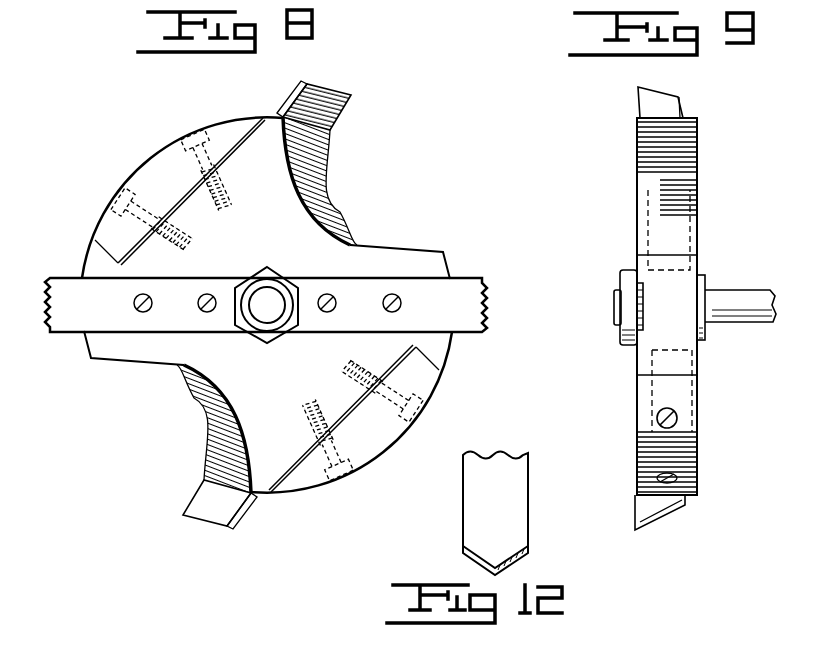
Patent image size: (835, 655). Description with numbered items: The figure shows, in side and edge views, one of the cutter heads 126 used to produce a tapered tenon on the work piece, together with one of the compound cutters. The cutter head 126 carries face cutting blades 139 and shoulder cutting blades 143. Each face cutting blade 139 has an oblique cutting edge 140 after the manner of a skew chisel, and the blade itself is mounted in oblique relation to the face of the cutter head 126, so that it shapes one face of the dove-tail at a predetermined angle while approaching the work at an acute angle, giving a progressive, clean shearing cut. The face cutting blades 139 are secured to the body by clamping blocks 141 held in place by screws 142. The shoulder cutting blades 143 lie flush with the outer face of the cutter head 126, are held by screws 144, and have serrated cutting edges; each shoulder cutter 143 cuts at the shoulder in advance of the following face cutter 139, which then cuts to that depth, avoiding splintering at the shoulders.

In FIG. 8, the cutter head 126 is at (340, 212).
In FIG. 9, the cutter head 126 is at (697, 196).
In FIG. 8, the face cutting blade 139 is at (337, 107).
In FIG. 9, the face cutting blade 139 is at (638, 100).
In FIG. 8, the oblique cutting edge 140 is at (322, 88).
In FIG. 9, the oblique cutting edge 140 is at (672, 97).
In FIG. 8, the clamping block 141 is at (153, 160).
In FIG. 9, the clamping block 141 is at (637, 401).
In FIG. 8, the screw 142 is at (193, 128).
In FIG. 9, the screw 142 is at (668, 478).
In FIG. 8, the shoulder cutting blade 143 is at (57, 335).
In FIG. 8, the bar screw 144 is at (206, 293).